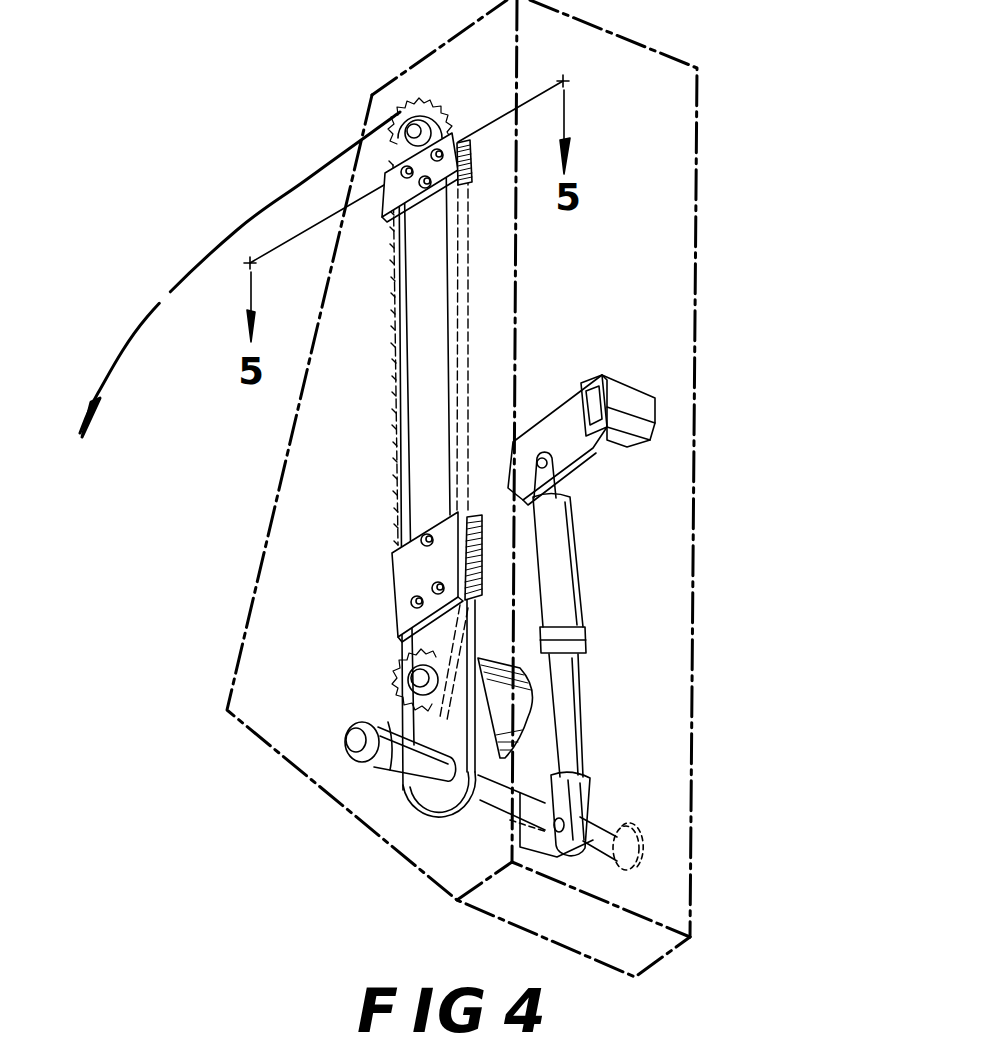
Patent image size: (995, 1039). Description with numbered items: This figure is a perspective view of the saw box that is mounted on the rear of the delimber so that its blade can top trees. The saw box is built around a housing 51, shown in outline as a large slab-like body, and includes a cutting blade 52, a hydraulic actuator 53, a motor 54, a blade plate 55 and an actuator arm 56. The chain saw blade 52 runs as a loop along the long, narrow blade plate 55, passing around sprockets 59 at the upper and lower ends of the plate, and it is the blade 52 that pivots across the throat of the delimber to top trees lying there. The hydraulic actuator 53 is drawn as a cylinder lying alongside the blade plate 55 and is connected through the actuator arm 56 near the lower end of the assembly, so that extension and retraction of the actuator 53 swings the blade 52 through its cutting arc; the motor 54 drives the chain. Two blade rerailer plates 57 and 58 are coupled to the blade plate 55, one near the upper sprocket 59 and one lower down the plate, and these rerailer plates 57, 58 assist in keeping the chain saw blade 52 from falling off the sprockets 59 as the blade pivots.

The housing 51 is at (690, 392).
The cutting blade 52 is at (393, 385).
The hydraulic actuator 53 is at (575, 583).
The motor 54 is at (530, 728).
The blade plate 55 is at (417, 340).
The actuator arm 56 is at (497, 825).
The blade rerailer plate 57 is at (388, 200).
The blade rerailer plate 58 is at (400, 580).
The sprockets 59 is at (418, 110).